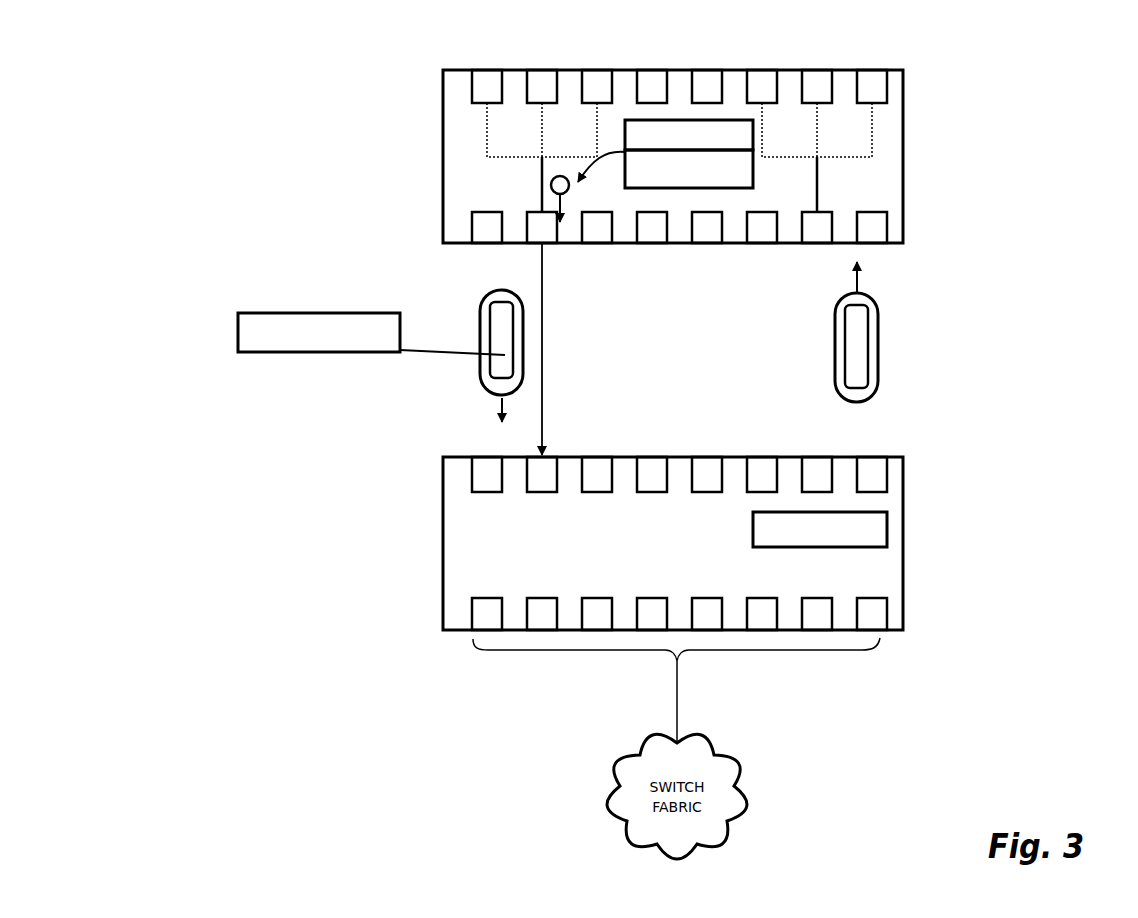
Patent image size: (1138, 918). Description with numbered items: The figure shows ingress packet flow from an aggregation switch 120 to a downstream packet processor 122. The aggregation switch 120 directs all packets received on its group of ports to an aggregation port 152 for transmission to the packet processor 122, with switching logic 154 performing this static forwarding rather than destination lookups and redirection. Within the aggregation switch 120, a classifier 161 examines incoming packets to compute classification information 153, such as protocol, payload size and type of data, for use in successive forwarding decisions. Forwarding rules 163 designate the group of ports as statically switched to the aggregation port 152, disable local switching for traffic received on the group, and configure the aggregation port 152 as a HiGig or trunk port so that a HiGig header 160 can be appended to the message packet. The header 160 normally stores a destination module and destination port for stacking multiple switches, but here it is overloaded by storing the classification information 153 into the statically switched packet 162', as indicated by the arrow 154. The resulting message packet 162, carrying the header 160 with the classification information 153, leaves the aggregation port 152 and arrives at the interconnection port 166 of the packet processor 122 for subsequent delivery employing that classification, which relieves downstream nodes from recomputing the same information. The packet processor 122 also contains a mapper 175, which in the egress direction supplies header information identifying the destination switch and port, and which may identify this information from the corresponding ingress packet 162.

The aggregation switch 120 is at (903, 113).
The classifier 161 is at (680, 120).
The forwarding rules 163 is at (753, 170).
The statically switched packet 162' is at (512, 193).
The switching logic 154 is at (607, 150).
The aggregation port 152 is at (546, 250).
The interconnection port 166 is at (555, 450).
The classification information 153 is at (238, 317).
The message packet 162 is at (454, 340).
The HiGig header 160 is at (490, 358).
The packet processor 122 is at (903, 586).
The mapper 175 is at (887, 522).